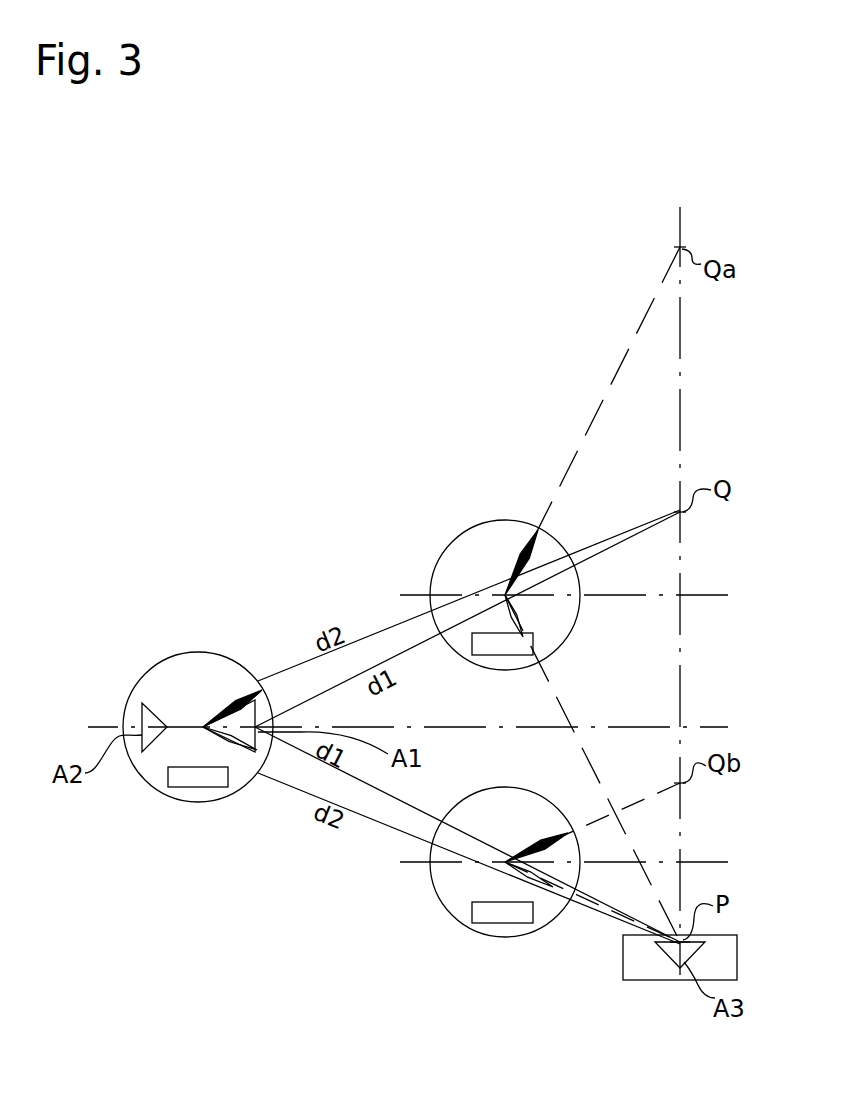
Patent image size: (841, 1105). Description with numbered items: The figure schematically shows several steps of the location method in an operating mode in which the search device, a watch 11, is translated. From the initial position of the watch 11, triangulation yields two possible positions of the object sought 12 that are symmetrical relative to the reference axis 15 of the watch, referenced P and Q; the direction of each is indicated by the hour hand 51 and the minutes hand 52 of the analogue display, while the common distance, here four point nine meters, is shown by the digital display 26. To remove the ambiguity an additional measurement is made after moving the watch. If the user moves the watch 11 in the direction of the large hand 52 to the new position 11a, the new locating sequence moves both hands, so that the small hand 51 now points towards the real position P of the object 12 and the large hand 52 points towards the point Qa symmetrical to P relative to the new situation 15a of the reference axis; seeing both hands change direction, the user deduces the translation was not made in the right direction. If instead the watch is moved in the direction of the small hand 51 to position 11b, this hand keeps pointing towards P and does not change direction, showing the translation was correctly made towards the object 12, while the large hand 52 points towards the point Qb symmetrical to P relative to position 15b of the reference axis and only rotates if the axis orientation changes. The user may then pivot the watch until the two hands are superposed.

The watch 11 is at (345, 717).
The new position 11a is at (425, 543).
The new position 11b is at (435, 916).
The object sought 12 is at (645, 976).
The axis 15 is at (705, 728).
The new situation of the reference axis 15a is at (705, 596).
The position of the reference axis 15b is at (707, 862).
The digital display 26 is at (203, 796).
The hour hand 51 is at (250, 752).
The minutes hand 52 is at (240, 700).